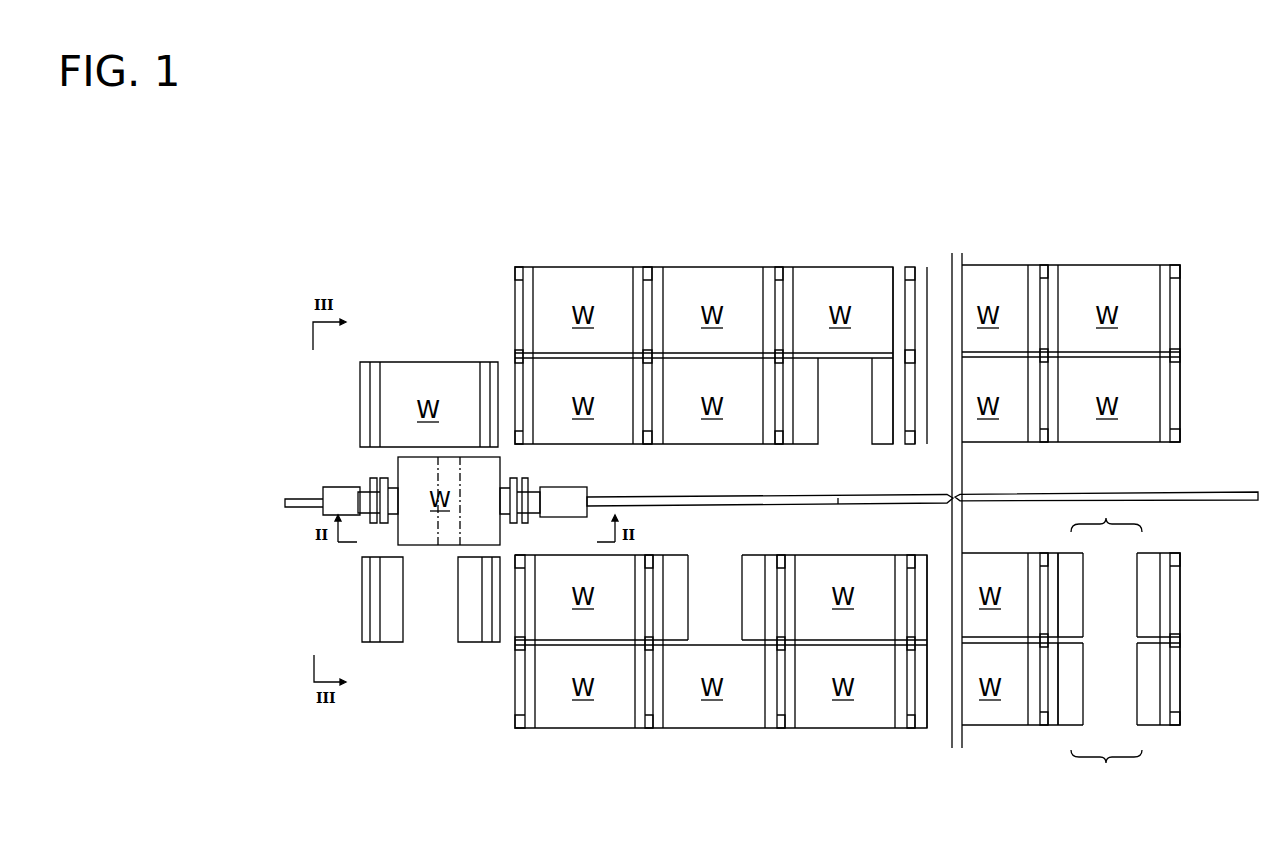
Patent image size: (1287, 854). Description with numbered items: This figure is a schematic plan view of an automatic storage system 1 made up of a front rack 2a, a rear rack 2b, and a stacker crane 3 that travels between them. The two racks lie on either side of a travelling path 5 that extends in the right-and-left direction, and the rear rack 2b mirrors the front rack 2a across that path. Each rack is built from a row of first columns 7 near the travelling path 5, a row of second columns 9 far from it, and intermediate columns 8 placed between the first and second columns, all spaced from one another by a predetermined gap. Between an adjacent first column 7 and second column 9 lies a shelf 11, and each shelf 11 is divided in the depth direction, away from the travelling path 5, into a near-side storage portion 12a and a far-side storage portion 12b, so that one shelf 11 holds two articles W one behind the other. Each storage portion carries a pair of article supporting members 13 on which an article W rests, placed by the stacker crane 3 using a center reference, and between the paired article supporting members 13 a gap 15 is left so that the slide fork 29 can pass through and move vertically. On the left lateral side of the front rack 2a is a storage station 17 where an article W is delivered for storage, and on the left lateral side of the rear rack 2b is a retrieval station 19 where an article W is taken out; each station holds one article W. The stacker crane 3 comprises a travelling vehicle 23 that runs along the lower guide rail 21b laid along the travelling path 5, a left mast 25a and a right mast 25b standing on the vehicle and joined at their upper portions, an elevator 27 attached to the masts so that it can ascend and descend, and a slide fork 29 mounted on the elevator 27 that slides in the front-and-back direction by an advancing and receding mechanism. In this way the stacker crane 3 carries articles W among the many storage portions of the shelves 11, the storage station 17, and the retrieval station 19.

The automatic storage system 1 is at (1183, 248).
The front rack 2a is at (877, 250).
The rear rack 2b is at (888, 735).
The stacker crane 3 is at (447, 546).
The travelling path 5 is at (778, 490).
The first columns 7 is at (653, 444).
The intermediate columns 8 is at (518, 357).
The second columns 9 is at (518, 267).
The shelf 11 is at (660, 267).
The near-side storage portion 12a is at (1106, 515).
The far-side storage portion 12b is at (1106, 767).
The article supporting members 13 is at (1127, 725).
The gap 15 is at (715, 578).
The storage station 17 is at (397, 358).
The retrieval station 19 is at (478, 645).
The lower guide rail 21b is at (838, 500).
The travelling vehicle 23 is at (573, 490).
The left mast 25a is at (352, 505).
The right mast 25b is at (530, 500).
The elevator 27 is at (390, 540).
The slide fork 29 is at (470, 473).